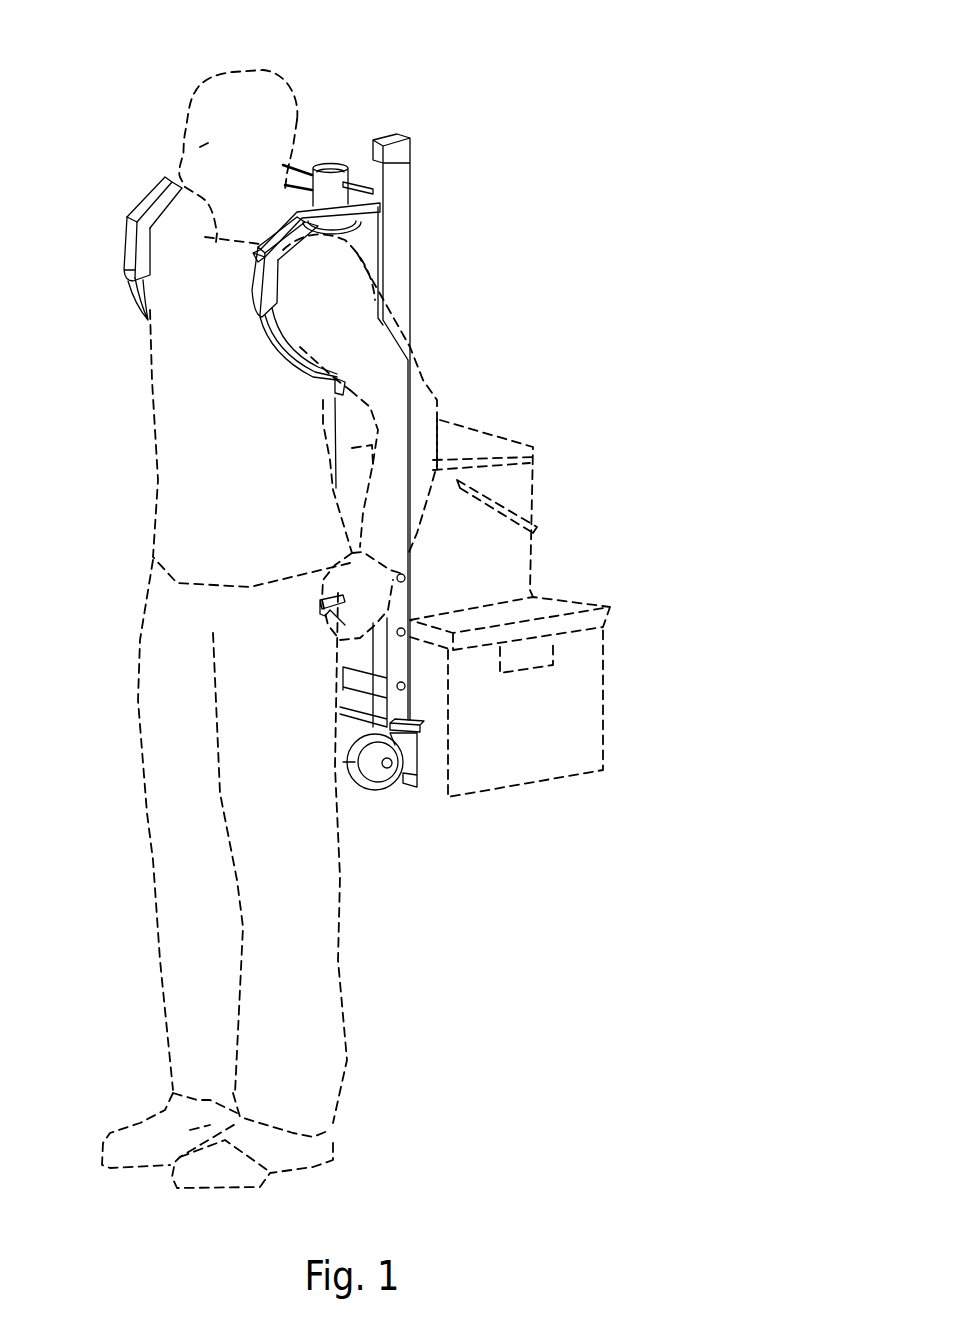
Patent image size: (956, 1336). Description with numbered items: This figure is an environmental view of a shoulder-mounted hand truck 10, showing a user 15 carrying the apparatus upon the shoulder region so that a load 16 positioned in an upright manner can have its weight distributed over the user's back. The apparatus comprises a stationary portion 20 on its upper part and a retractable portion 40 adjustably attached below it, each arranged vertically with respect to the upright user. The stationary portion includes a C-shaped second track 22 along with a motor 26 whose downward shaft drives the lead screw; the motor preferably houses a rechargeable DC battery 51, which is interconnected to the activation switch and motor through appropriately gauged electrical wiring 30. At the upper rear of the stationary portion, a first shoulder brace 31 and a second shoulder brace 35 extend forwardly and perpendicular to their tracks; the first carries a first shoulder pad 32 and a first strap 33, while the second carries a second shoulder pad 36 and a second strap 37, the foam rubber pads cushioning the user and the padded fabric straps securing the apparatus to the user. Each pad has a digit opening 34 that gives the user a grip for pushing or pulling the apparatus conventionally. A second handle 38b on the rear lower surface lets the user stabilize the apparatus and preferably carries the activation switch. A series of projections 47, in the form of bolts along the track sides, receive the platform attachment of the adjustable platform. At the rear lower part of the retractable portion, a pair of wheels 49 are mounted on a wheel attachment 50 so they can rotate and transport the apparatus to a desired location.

The shoulder-mounted hand truck 10 is at (516, 70).
The user 15 is at (246, 72).
The load 16 is at (555, 600).
The stationary portion 20 is at (542, 189).
The second track 22 is at (403, 239).
The motor 26 is at (333, 193).
The electrical wiring 30 is at (358, 176).
The first shoulder brace 31 is at (143, 202).
The first shoulder pad 32 is at (153, 227).
The first strap 33 is at (137, 297).
The digit opening 34 is at (362, 222).
The second shoulder brace 35 is at (260, 277).
The second shoulder pad 36 is at (273, 290).
The second strap 37 is at (273, 353).
The second handle 38b is at (320, 610).
The retractable portion 40 is at (457, 1046).
The projections 47 is at (397, 686).
The wheels 49 is at (367, 790).
The wheel attachment 50 is at (407, 760).
The rechargeable DC battery 51 is at (322, 163).